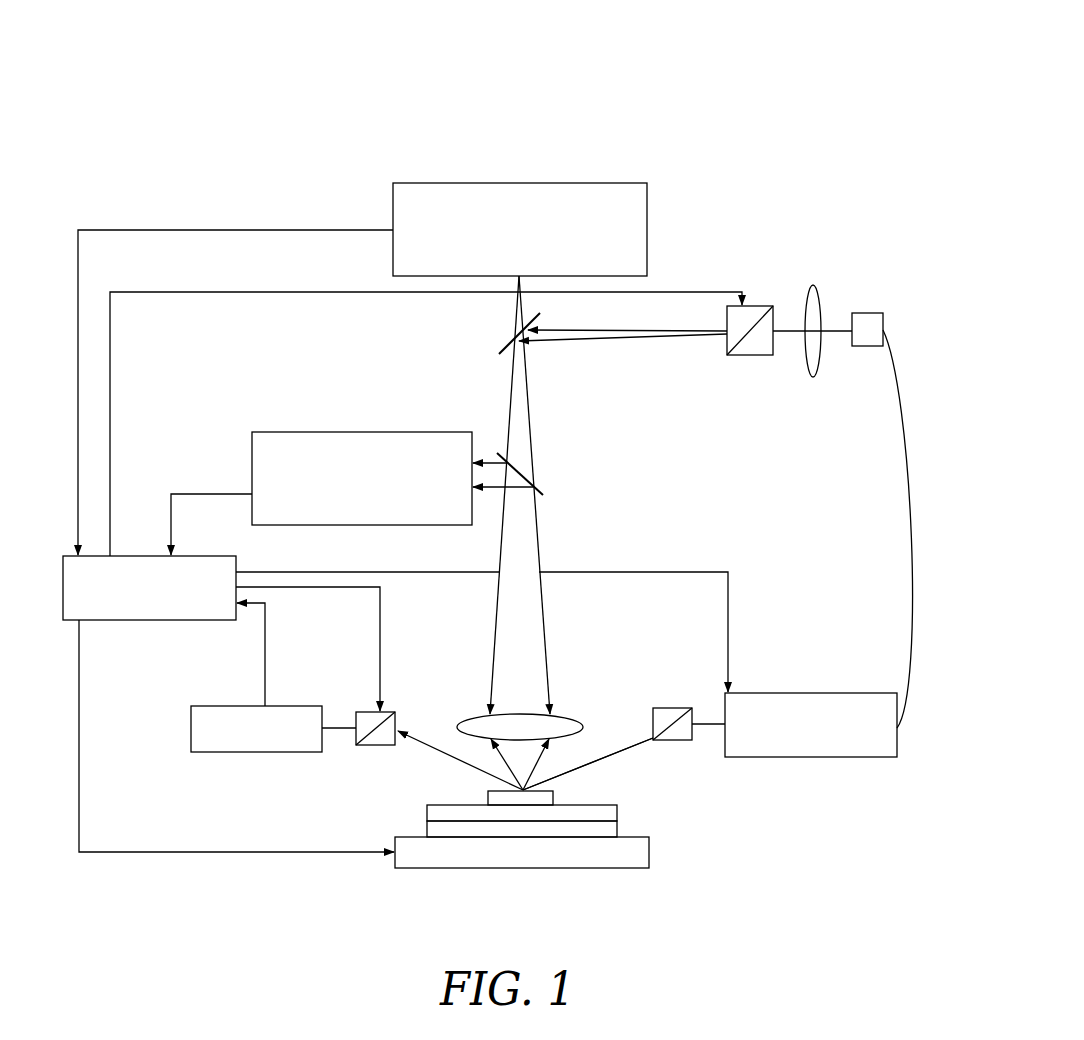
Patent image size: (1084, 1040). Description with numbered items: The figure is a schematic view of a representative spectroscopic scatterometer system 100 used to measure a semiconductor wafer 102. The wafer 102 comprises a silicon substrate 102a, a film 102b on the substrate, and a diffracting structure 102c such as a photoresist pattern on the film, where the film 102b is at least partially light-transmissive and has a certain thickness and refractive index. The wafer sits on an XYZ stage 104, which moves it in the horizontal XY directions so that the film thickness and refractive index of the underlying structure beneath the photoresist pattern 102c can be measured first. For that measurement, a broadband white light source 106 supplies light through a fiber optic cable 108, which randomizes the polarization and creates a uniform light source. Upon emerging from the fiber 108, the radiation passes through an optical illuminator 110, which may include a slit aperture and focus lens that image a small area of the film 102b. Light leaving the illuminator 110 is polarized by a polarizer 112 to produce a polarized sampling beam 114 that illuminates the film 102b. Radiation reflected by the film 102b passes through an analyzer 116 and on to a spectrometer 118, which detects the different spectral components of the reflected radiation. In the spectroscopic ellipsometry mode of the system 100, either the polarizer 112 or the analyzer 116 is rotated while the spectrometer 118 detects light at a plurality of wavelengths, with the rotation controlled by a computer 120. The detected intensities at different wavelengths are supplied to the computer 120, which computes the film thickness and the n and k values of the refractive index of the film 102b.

The spectroscopic scatterometer system 100 is at (726, 113).
The semiconductor wafer 102 is at (378, 815).
The silicon substrate 102a is at (617, 830).
The film 102b is at (617, 805).
The diffracting structure 102c is at (553, 791).
The XYZ stage 104 is at (649, 845).
The white light source 106 is at (866, 313).
The fiber optic cable 108 is at (901, 393).
The optical illuminator 110 is at (793, 693).
The polarizer 112 is at (680, 740).
The polarized sampling beam 114 is at (614, 745).
The analyzer 116 is at (363, 712).
The spectrometer 118 is at (236, 706).
The computer 120 is at (125, 556).